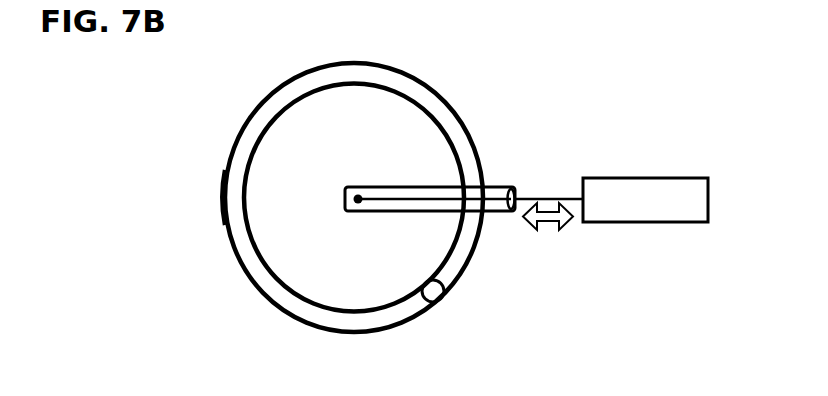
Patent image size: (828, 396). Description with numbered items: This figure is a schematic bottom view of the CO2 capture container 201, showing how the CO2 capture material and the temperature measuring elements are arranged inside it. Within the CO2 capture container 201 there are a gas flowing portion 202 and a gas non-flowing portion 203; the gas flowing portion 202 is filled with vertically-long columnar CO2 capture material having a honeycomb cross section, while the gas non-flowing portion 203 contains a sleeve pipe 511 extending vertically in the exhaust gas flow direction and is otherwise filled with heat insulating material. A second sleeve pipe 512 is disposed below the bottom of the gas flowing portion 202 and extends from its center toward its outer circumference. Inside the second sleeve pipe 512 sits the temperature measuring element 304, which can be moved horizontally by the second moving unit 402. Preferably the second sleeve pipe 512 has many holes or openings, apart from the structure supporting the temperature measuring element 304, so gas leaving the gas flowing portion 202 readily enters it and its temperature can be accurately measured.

The CO2 capture container 201 is at (268, 92).
The gas flowing portion 202 is at (268, 148).
The gas non-flowing portion 203 is at (233, 191).
The temperature measuring element 304 is at (358, 204).
The second moving unit 402 is at (646, 178).
The sleeve pipe 511 is at (435, 294).
The second sleeve pipe 512 is at (497, 185).